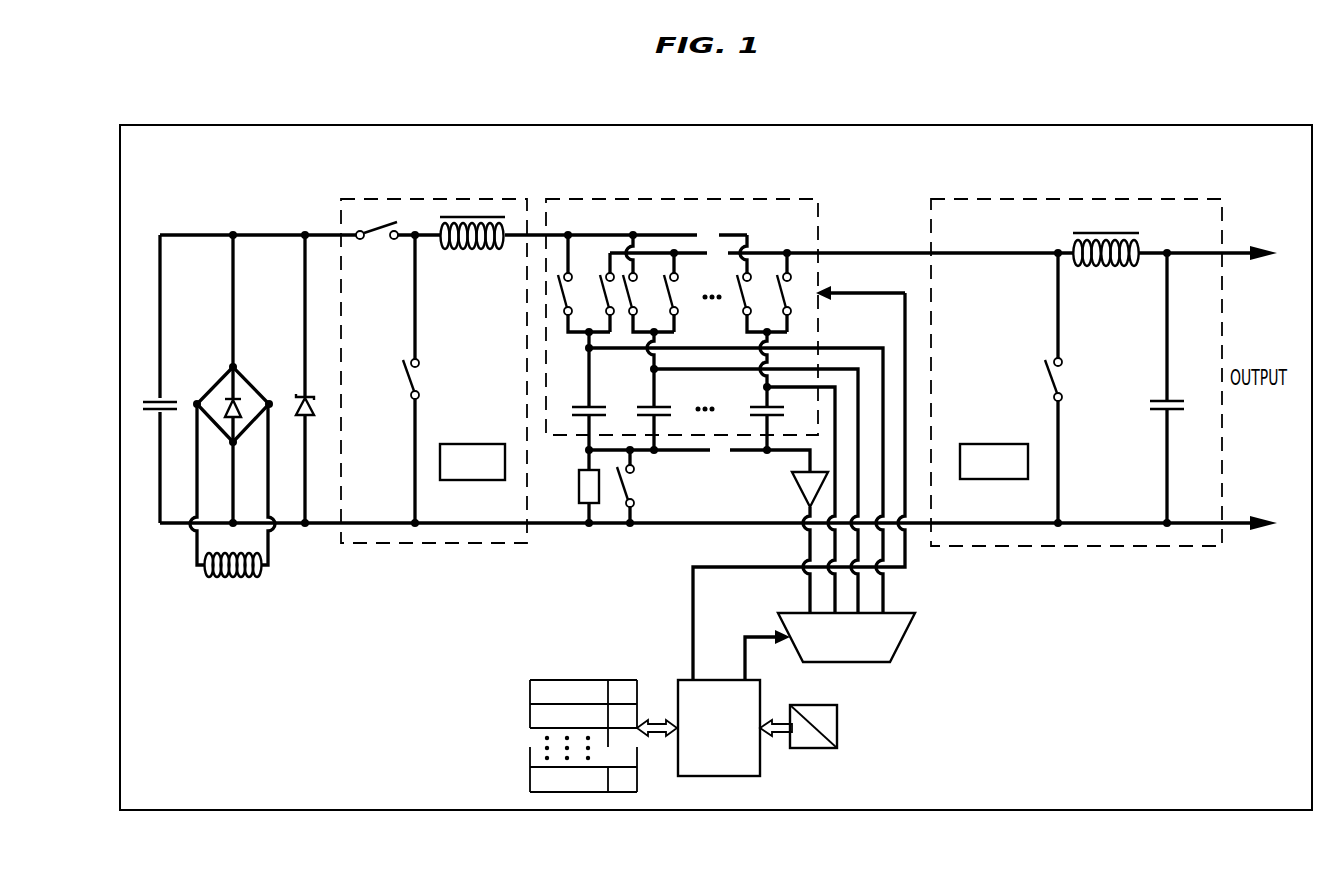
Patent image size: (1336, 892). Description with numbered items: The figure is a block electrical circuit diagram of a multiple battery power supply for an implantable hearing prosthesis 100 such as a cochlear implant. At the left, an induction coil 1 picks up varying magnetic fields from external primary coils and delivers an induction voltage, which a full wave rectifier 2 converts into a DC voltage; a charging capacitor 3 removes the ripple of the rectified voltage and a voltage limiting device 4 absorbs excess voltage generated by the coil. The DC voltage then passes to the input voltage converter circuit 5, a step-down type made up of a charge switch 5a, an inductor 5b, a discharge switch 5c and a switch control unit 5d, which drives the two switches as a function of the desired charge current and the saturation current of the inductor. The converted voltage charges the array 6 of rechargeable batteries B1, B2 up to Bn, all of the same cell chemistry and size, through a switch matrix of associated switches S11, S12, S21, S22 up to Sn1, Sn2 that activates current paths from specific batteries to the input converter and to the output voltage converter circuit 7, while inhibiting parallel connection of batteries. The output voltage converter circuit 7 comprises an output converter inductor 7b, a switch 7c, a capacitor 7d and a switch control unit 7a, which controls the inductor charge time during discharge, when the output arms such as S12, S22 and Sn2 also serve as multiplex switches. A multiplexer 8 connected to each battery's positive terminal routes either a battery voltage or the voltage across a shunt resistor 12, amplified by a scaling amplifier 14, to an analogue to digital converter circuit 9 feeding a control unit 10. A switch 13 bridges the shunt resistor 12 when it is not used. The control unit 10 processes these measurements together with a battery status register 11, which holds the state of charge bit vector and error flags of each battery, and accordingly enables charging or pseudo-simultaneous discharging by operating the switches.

The implantable hearing prosthesis 100 is at (239, 126).
The induction coil 1 is at (233, 578).
The rectifier 2 is at (243, 422).
The charging capacitor 3 is at (156, 398).
The voltage limiting device 4 is at (307, 396).
The input voltage converter circuit 5 is at (359, 192).
The charge switch 5a is at (378, 240).
The inductor 5b is at (488, 244).
The discharge switch 5c is at (421, 380).
The switch control unit 5d is at (472, 462).
The array of rechargeable batteries 6 is at (571, 192).
The output voltage converter circuit 7 is at (954, 192).
The switch control unit 7a is at (994, 461).
The output converter inductor 7b is at (1103, 268).
The switch 7c is at (1062, 378).
The capacitor 7d is at (1172, 399).
The multiplexer 8 is at (846, 637).
The analogue to digital converter circuit 9 is at (838, 726).
The control unit 10 is at (719, 728).
The battery status register 11 is at (546, 680).
The shunt resistor 12 is at (579, 492).
The switch 13 is at (636, 490).
The scaling amplifier 14 is at (800, 493).
The switch S11 is at (558, 272).
The switch S12 is at (599, 272).
The switch S21 is at (637, 285).
The switch S22 is at (680, 285).
The switch Sn1 is at (750, 285).
The switch Sn2 is at (790, 285).
The rechargeable battery B1 is at (583, 391).
The rechargeable battery B2 is at (649, 391).
The rechargeable battery Bn is at (759, 391).